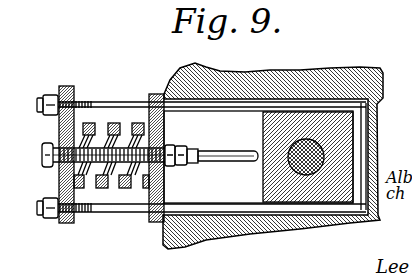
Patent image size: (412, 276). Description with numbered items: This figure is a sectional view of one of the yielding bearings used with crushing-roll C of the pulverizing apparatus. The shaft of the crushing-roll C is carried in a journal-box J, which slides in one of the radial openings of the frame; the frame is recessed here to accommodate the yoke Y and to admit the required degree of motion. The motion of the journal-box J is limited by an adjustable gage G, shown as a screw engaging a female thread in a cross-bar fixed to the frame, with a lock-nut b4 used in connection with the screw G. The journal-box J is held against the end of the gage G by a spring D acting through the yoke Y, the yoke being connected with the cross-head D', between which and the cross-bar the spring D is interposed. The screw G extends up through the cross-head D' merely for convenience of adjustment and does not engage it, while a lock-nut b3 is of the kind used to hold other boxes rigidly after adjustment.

The yoke Y is at (246, 100).
The spring D is at (111, 123).
The cross-head D' is at (201, 87).
The lock-nut b3 is at (157, 218).
The lock-nut b4 is at (182, 141).
The journal-box J is at (258, 157).
The adjustable gage G is at (222, 170).
The crushing-roll C is at (308, 174).